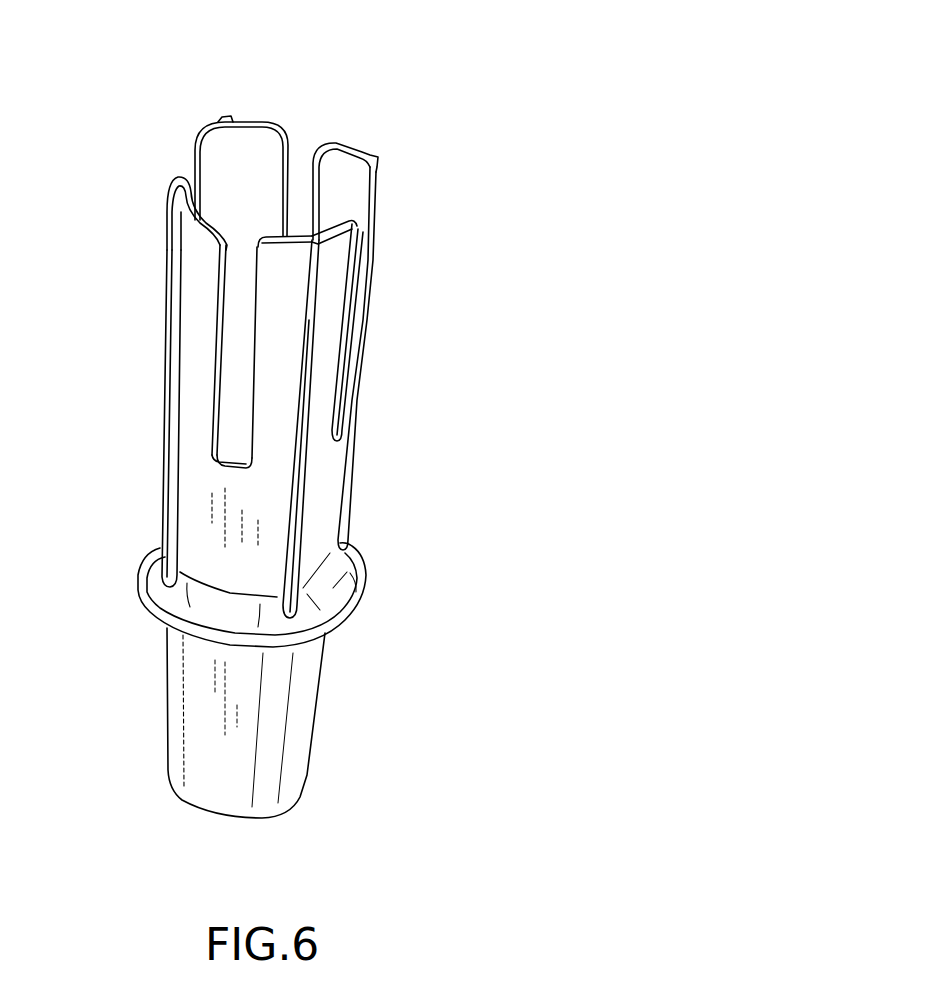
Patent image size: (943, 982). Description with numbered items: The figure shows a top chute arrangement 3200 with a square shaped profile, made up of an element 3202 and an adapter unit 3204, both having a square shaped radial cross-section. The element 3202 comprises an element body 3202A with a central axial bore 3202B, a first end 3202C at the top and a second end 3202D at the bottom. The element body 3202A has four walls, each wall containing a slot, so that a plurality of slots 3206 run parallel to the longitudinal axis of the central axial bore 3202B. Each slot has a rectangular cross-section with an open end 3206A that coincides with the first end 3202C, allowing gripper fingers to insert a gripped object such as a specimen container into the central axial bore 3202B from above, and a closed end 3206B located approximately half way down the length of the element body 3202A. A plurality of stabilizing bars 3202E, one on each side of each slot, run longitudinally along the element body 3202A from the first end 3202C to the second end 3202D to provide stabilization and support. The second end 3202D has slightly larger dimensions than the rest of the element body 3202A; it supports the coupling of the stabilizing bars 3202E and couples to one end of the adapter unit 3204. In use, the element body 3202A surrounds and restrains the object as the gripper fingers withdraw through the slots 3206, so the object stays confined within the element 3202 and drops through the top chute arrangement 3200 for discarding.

The top chute arrangement 3200 is at (524, 90).
The element 3202 is at (197, 545).
The element body 3202A is at (293, 292).
The central axial bore 3202B is at (267, 196).
The first end 3202C is at (208, 129).
The second end 3202D is at (333, 590).
The stabilizing bars 3202E is at (300, 498).
The adapter unit 3204 is at (203, 757).
The slots 3206 is at (239, 366).
The open end 3206A is at (308, 148).
The closed end 3206B is at (250, 457).